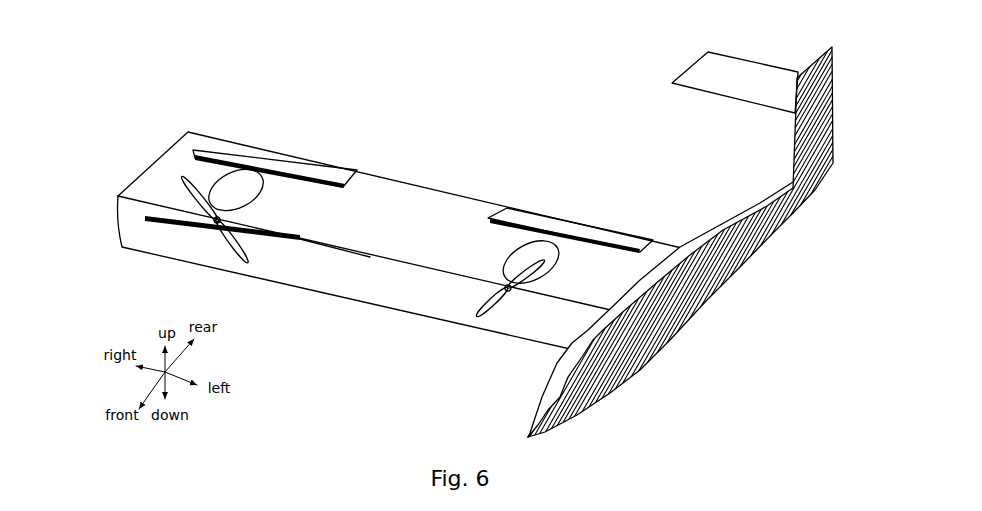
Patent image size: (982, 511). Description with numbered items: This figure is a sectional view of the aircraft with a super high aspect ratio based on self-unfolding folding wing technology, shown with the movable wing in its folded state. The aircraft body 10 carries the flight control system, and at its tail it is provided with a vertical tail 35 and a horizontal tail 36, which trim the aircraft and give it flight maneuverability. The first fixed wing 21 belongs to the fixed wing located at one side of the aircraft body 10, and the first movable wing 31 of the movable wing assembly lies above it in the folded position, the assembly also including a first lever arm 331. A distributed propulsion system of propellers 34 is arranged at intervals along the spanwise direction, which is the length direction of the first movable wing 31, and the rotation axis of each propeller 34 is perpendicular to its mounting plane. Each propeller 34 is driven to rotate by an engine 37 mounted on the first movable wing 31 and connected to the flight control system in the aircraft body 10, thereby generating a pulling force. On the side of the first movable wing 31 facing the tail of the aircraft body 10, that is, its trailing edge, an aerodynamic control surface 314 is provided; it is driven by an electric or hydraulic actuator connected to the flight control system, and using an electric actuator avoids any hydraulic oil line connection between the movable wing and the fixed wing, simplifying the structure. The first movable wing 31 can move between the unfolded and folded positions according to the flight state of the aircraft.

The aircraft body 10 is at (682, 317).
The first fixed wing 21 is at (173, 243).
The first movable wing 31 is at (408, 200).
The aerodynamic control surface 314 is at (245, 152).
The first lever arm 331 is at (173, 218).
The propeller 34 is at (230, 246).
The vertical tail 35 is at (822, 133).
The horizontal tail 36 is at (767, 78).
The engine 37 is at (226, 194).